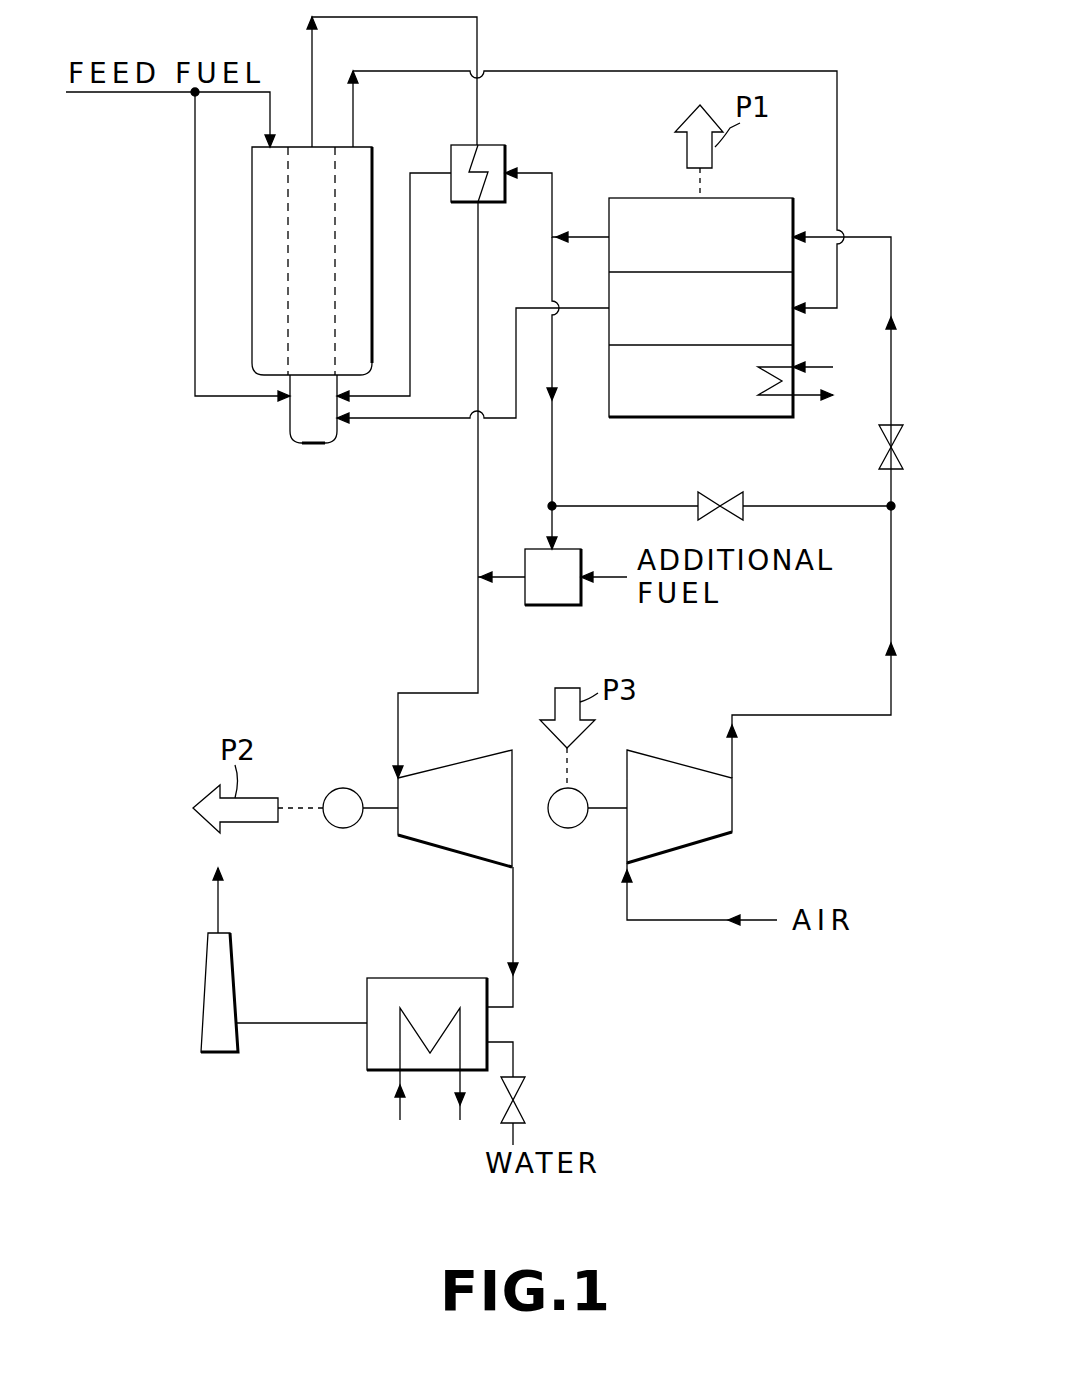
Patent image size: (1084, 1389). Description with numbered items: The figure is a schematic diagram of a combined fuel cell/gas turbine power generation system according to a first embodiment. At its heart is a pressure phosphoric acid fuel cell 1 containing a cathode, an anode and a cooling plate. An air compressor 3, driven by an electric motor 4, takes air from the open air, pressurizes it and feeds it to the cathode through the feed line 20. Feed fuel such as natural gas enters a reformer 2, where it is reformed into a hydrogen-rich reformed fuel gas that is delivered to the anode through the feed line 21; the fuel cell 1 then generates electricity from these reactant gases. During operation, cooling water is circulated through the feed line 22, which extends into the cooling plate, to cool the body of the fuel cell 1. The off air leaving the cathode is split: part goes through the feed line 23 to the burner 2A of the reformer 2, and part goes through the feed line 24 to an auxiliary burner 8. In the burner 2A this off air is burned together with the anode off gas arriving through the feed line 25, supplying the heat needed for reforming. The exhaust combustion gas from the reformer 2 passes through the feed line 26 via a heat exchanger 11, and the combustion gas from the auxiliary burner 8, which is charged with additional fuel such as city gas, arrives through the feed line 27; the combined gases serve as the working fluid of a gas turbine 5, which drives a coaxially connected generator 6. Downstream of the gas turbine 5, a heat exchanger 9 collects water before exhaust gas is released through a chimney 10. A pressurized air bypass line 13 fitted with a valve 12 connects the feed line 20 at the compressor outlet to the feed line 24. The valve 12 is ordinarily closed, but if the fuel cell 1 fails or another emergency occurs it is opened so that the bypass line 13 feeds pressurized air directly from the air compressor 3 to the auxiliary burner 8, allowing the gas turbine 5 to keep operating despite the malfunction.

The pressure phosphoric acid fuel cell 1 is at (768, 197).
The reformer 2 is at (249, 251).
The burner 2A is at (287, 420).
The air compressor 3 is at (680, 848).
The electric motor 4 is at (557, 830).
The gas turbine 5 is at (430, 847).
The generator 6 is at (337, 830).
The auxiliary burner 8 is at (553, 605).
The heat exchanger 9 is at (425, 978).
The chimney 10 is at (235, 988).
The heat exchanger 11 is at (497, 145).
The valve 12 is at (720, 492).
The pressurized air bypass line 13 is at (810, 506).
The feed line 20 is at (891, 585).
The feed line 21 is at (733, 71).
The feed line 22 is at (823, 367).
The feed line 23 is at (552, 190).
The feed line 24 is at (552, 385).
The feed line 25 is at (433, 418).
The feed line 26 is at (480, 38).
The feed line 27 is at (507, 572).